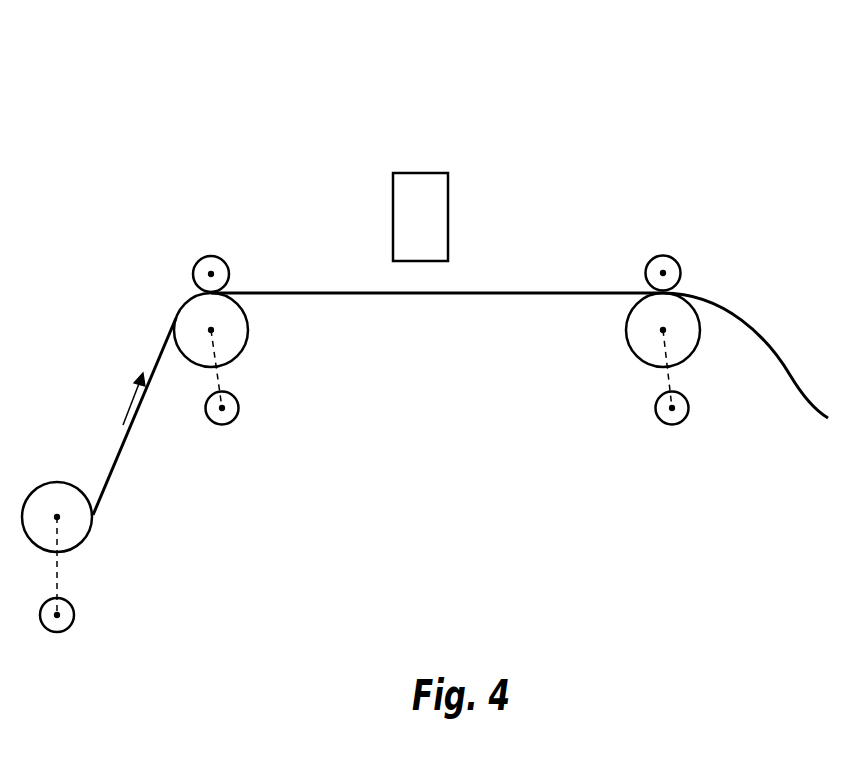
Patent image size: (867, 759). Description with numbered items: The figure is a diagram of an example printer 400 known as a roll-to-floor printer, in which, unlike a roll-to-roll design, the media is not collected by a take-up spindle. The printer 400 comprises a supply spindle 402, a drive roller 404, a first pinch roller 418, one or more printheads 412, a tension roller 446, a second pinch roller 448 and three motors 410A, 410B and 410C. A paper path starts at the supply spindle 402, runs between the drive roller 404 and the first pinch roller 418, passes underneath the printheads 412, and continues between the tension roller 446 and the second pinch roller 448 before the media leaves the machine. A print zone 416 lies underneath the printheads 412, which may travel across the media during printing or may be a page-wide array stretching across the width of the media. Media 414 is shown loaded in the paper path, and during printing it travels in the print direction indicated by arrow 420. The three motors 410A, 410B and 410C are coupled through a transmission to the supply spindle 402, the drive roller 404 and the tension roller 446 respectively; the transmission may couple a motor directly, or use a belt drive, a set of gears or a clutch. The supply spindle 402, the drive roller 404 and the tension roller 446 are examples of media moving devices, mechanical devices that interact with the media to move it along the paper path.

The printer 400 is at (203, 103).
The supply spindle 402 is at (53, 482).
The drive roller 404 is at (249, 320).
The motor 410A is at (238, 402).
The motor 410B is at (74, 610).
The motor 410C is at (688, 402).
The printheads 412 is at (448, 195).
The media 414 is at (547, 291).
The print zone 416 is at (408, 277).
The first pinch roller 418 is at (200, 260).
The arrow 420 is at (125, 410).
The tension roller 446 is at (625, 340).
The second pinch roller 448 is at (670, 257).